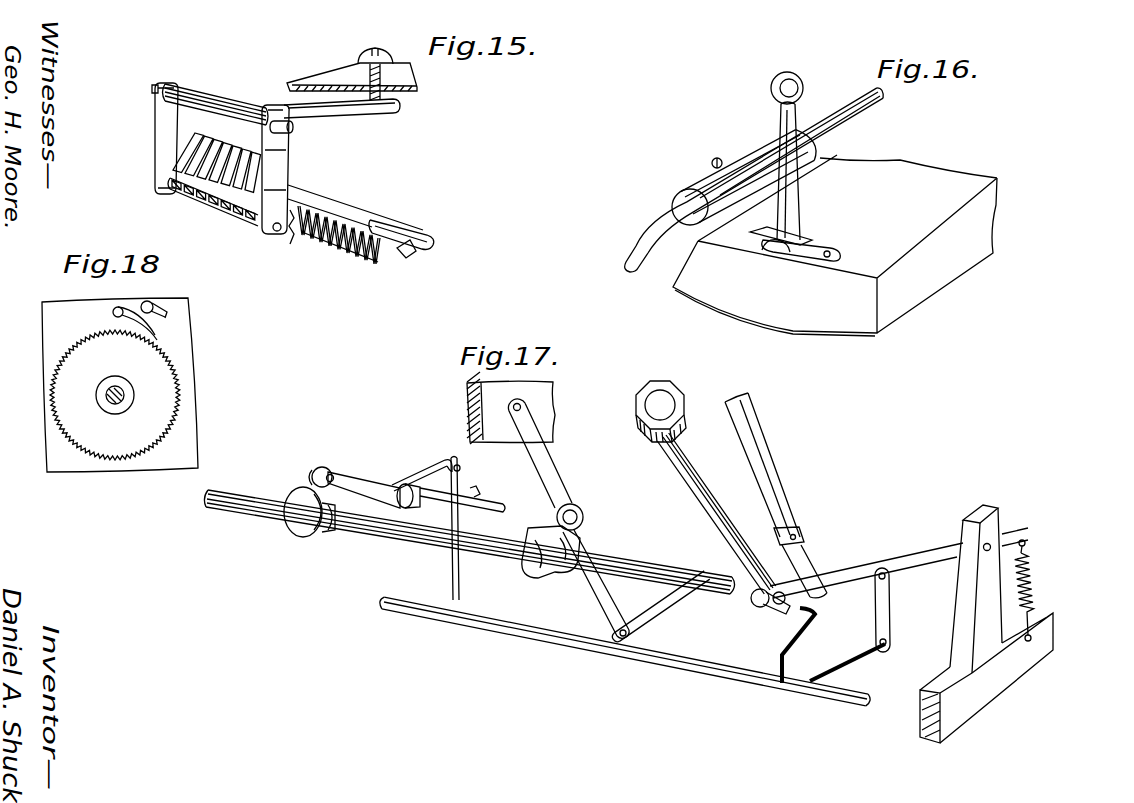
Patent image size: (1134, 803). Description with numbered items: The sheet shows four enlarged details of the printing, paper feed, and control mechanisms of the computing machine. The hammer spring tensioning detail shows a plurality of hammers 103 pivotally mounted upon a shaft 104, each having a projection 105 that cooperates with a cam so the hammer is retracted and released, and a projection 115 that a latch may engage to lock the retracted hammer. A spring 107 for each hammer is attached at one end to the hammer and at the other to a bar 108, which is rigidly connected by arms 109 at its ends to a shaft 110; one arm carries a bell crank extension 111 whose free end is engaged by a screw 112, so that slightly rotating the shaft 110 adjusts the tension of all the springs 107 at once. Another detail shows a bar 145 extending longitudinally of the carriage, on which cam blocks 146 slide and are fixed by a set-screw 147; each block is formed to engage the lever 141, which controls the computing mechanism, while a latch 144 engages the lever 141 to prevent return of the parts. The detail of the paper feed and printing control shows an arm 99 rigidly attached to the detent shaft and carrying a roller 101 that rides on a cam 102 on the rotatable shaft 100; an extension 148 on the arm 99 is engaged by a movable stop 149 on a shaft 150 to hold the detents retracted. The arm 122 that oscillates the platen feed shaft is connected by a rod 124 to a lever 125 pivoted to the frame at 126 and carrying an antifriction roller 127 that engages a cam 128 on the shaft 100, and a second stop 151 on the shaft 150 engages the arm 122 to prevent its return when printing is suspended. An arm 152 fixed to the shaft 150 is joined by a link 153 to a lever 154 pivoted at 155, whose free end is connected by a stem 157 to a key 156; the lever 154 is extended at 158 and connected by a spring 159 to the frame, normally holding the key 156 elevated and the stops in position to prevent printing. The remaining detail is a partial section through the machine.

In FIG. 17, the arm 99 is at (357, 483).
In FIG. 17, the rotatable shaft 100 is at (640, 568).
In FIG. 17, the roller 101 is at (325, 468).
In FIG. 17, the cam 102 is at (300, 520).
In FIG. 15, the hammers 103 is at (327, 207).
In FIG. 15, the shaft 104 is at (403, 230).
In FIG. 15, the projection 105 is at (378, 266).
In FIG. 15, the spring 107 is at (292, 244).
In FIG. 15, the bar 108 is at (220, 210).
In FIG. 15, the arms 109 is at (282, 174).
In FIG. 15, the shaft 110 is at (293, 130).
In FIG. 15, the bell crank extension 111 is at (363, 112).
In FIG. 15, the screw 112 is at (383, 70).
In FIG. 15, the projection 115 is at (412, 254).
In FIG. 17, the arm 122 is at (775, 482).
In FIG. 17, the rod 124 is at (693, 597).
In FIG. 17, the lever 125 is at (548, 468).
In FIG. 17, the pivot 126 is at (522, 403).
In FIG. 17, the antifriction roller 127 is at (577, 510).
In FIG. 17, the cam 128 is at (542, 523).
In FIG. 16, the lever 141 is at (797, 207).
In FIG. 16, the latch 144 is at (817, 243).
In FIG. 16, the bar 145 is at (838, 115).
In FIG. 16, the cam block 146 is at (727, 183).
In FIG. 16, the set-screw 147 is at (732, 132).
In FIG. 17, the extension 148 is at (430, 467).
In FIG. 17, the movable stop 149 is at (459, 592).
In FIG. 17, the shaft 150 is at (527, 640).
In FIG. 17, the second stop 151 is at (792, 645).
In FIG. 17, the arm 152 is at (853, 660).
In FIG. 17, the link 153 is at (883, 607).
In FIG. 17, the lever 154 is at (853, 570).
In FIG. 17, the pivot 155 is at (985, 545).
In FIG. 17, the key 156 is at (680, 397).
In FIG. 17, the stem 157 is at (710, 488).
In FIG. 17, the extension 158 is at (1023, 528).
In FIG. 17, the spring 159 is at (1030, 585).